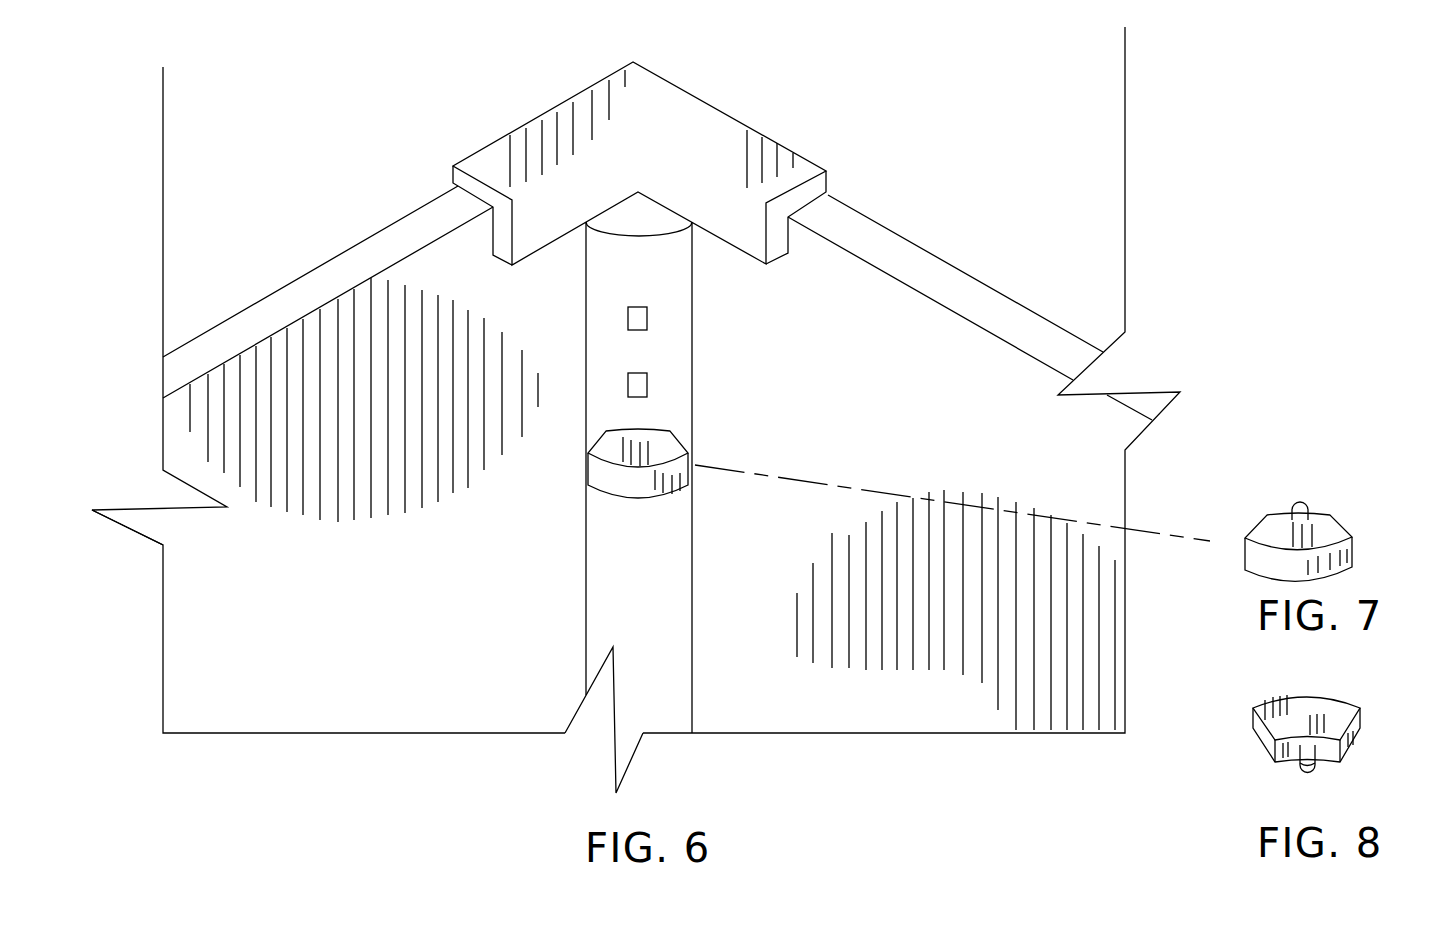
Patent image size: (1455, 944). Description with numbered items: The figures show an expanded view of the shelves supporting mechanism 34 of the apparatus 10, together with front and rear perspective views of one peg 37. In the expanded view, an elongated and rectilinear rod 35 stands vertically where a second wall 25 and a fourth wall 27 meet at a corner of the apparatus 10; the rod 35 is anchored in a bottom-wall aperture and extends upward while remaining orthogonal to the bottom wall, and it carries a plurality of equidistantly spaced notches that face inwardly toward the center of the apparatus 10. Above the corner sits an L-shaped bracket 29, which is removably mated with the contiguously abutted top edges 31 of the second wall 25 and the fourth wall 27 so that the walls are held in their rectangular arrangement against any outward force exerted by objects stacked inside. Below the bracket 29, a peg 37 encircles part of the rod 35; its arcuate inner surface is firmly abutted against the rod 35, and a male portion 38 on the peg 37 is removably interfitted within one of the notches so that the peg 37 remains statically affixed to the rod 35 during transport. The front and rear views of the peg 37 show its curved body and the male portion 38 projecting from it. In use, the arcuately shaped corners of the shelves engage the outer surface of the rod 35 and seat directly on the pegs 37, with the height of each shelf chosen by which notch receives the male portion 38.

In FIG. 6, the apparatus 10 is at (1273, 163).
In FIG. 6, the second wall 25 is at (378, 325).
In FIG. 6, the fourth wall 27 is at (937, 335).
In FIG. 6, the L-shaped bracket 29 is at (758, 147).
In FIG. 6, the top edges 31 is at (283, 312).
In FIG. 6, the shelves supporting mechanism 34 is at (628, 318).
In FIG. 6, the rod 35 is at (675, 350).
In FIG. 6, the peg 37 is at (678, 477).
In FIG. 7, the peg 37 is at (1345, 555).
In FIG. 8, the peg 37 is at (1340, 712).
In FIG. 7, the male portion 38 is at (1308, 503).
In FIG. 8, the male portion 38 is at (1315, 773).